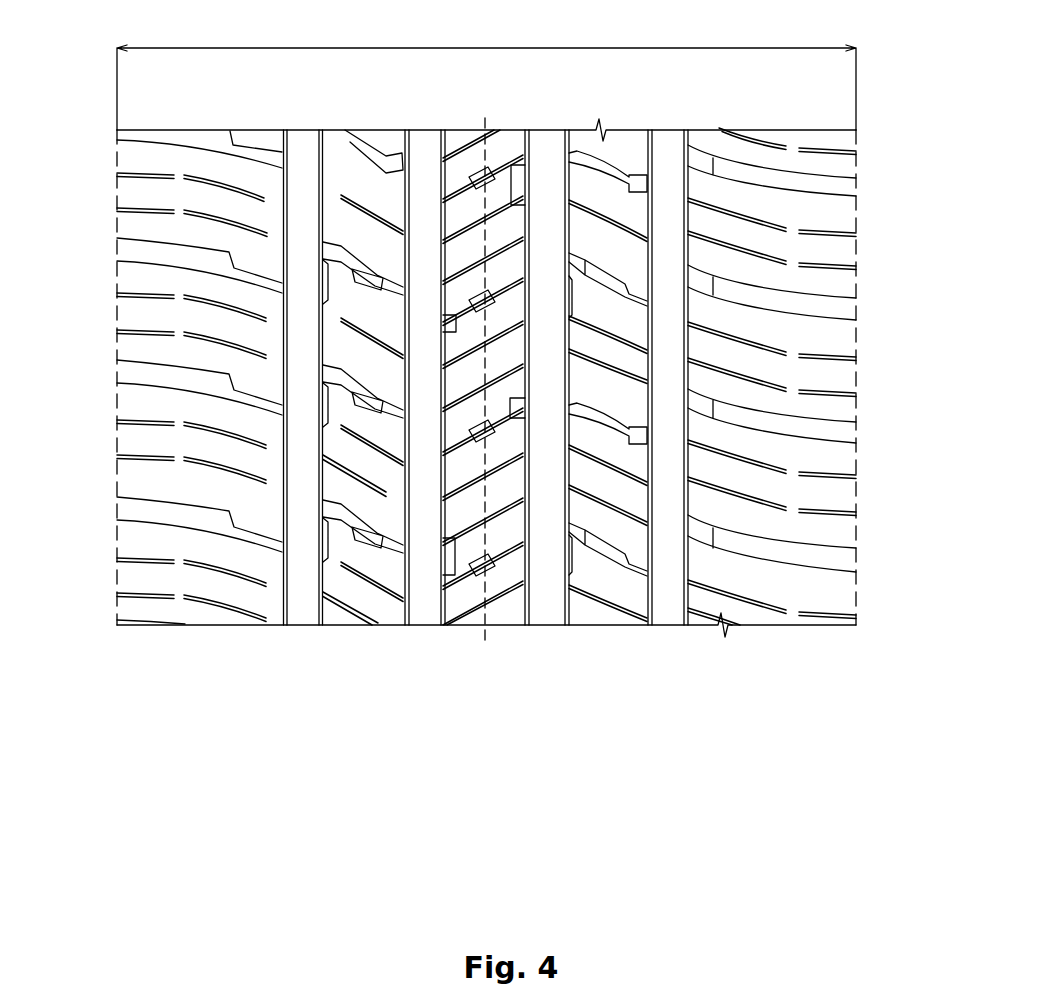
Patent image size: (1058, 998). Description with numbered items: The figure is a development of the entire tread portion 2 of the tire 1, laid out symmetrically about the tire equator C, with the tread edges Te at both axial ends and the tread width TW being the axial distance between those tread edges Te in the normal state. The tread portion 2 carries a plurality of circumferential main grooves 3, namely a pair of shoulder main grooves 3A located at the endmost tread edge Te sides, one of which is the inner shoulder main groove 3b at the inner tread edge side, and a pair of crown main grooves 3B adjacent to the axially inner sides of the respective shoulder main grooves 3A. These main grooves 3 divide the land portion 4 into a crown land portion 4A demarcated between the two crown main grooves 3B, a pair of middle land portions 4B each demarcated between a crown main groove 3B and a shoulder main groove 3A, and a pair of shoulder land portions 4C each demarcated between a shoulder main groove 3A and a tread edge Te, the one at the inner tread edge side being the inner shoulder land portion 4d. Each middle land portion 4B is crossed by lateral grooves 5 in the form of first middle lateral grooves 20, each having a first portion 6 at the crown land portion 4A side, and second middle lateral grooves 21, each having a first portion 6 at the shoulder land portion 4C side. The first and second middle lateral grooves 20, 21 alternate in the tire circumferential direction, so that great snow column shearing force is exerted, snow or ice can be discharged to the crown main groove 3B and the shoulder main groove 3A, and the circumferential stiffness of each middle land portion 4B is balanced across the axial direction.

The tire 1 is at (936, 73).
The tread portion 2 is at (876, 84).
The tread width TW is at (486, 77).
The tread edge Te is at (116, 163).
The tire equator C is at (486, 370).
The main groove 3 is at (675, 157).
The shoulder main groove 3A is at (307, 154).
The crown main groove 3B is at (428, 152).
The inner shoulder main groove 3b is at (673, 594).
The land portion 4 is at (780, 154).
The crown land portion 4A is at (505, 145).
The middle land portion 4B is at (352, 157).
The shoulder land portion 4C is at (184, 153).
The inner shoulder land portion 4d is at (799, 597).
The lateral groove 5 is at (357, 530).
The first portion 6 is at (328, 513).
The first middle lateral groove 20 is at (371, 398).
The second middle lateral groove 21 is at (605, 423).